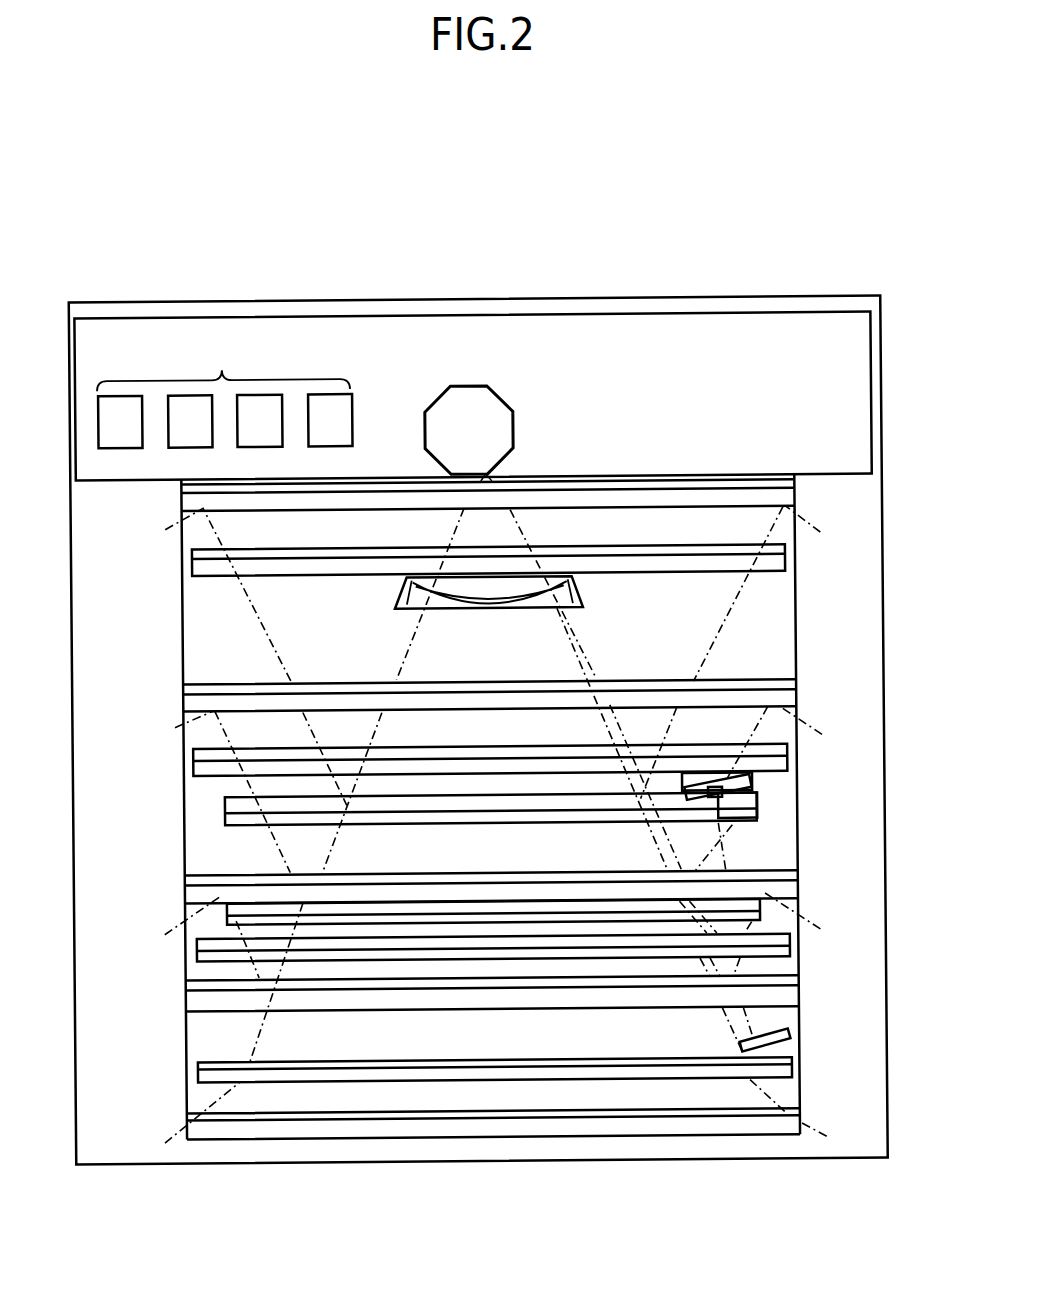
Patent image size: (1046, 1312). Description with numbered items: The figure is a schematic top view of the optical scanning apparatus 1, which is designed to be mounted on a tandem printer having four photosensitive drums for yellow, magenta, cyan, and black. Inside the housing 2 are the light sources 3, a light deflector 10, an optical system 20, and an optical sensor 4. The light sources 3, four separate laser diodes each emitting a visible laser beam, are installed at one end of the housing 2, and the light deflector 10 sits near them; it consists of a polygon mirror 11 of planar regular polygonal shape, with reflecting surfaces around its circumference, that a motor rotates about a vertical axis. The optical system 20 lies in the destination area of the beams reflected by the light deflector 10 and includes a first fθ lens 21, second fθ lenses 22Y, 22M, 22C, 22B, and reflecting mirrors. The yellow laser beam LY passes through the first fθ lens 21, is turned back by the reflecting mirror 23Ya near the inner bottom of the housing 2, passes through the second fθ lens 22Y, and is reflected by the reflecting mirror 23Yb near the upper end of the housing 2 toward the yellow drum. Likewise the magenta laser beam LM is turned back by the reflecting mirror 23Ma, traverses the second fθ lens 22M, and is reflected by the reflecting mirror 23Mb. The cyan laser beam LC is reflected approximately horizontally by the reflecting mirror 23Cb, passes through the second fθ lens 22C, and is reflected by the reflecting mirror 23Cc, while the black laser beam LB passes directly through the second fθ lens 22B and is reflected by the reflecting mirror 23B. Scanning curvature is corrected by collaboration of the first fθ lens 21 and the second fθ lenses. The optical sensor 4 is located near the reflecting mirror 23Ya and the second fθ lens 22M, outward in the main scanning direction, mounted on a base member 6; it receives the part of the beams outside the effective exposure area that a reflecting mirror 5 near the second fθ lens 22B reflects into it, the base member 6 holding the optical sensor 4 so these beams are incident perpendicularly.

The optical scanning apparatus 1 is at (357, 231).
The housing 2 is at (718, 298).
The light sources 3 is at (225, 366).
The optical sensor 4 is at (726, 799).
The reflecting mirror 5 is at (785, 1035).
The base member 6 is at (691, 802).
The light deflector 10 is at (527, 400).
The polygon mirror 11 is at (516, 432).
The optical system 20 is at (201, 815).
The first fθ lens 21 is at (586, 601).
The second fθ lens 22Y is at (228, 573).
The second fθ lens 22M is at (787, 753).
The second fθ lens 22C is at (195, 948).
The second fθ lens 22B is at (197, 1068).
The reflecting mirror 23Yb is at (714, 482).
The reflecting mirror 23Ya is at (746, 824).
The reflecting mirror 23Mb is at (333, 682).
The reflecting mirror 23Ma is at (436, 902).
The reflecting mirror 23Cc is at (224, 903).
The reflecting mirror 23Cb is at (203, 998).
The reflecting mirror 23B is at (202, 1101).
The yellow laser beam LY is at (177, 520).
The magenta laser beam LM is at (167, 735).
The cyan laser beam LC is at (805, 923).
The black laser beam LB is at (805, 1123).